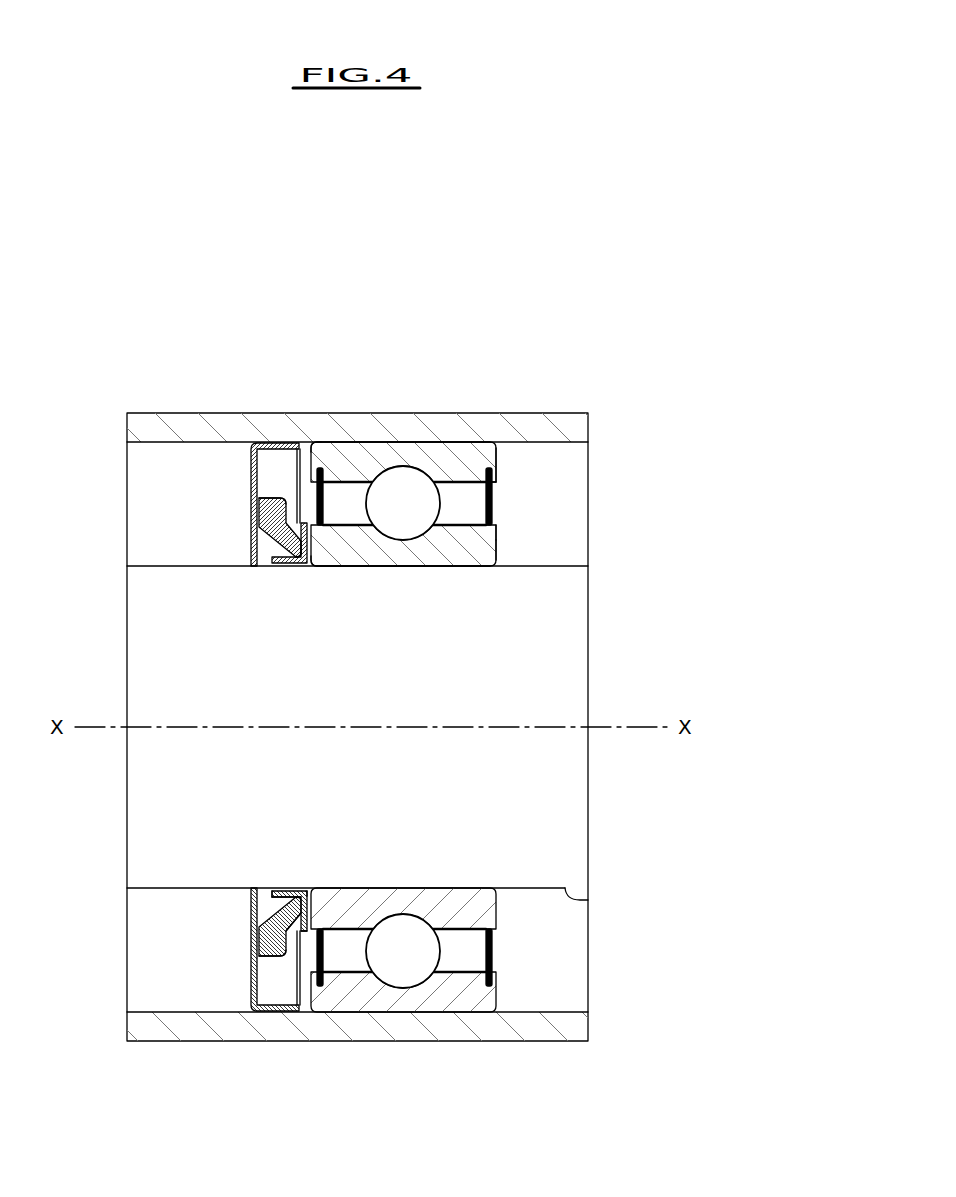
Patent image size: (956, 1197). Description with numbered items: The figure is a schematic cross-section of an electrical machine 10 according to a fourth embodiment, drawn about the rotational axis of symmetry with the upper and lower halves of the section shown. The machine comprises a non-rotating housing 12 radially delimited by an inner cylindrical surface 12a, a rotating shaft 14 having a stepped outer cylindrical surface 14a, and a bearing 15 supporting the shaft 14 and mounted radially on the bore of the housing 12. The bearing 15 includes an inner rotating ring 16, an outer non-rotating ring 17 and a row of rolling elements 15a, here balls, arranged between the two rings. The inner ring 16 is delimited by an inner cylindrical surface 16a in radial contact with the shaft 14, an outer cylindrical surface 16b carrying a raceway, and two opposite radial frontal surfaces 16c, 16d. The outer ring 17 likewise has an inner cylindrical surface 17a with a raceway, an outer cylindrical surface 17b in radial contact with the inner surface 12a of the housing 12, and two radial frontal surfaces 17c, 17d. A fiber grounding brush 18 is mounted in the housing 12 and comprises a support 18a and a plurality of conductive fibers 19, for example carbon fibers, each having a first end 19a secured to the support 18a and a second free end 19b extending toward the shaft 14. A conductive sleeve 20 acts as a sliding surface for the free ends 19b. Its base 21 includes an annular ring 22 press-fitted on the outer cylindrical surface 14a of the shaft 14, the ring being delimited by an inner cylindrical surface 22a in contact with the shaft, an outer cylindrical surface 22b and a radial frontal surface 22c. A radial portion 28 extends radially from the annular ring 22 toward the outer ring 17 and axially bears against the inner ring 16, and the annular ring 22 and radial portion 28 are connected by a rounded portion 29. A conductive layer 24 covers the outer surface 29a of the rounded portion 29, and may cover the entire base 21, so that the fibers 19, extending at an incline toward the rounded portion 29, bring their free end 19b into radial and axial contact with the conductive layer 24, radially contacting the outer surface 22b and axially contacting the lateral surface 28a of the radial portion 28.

The electrical machine 10 is at (651, 334).
The housing 12 is at (578, 406).
The inner cylindrical surface 12a is at (157, 442).
The rotating shaft 14 is at (590, 636).
The stepped outer cylindrical surface 14a is at (588, 900).
The bearing 15 is at (518, 497).
The rolling elements 15a is at (403, 503).
The inner ring 16 is at (497, 566).
The inner cylindrical surface 16a is at (419, 568).
The outer cylindrical surface 16b is at (497, 508).
The radial frontal surface 16c is at (309, 568).
The radial frontal surface 16d is at (485, 551).
The outer ring 17 is at (452, 458).
The inner cylindrical surface 17a is at (497, 488).
The outer cylindrical surface 17b is at (388, 442).
The radial frontal surface 17c is at (308, 458).
The radial frontal surface 17d is at (497, 456).
The fiber grounding brush 18 is at (234, 491).
The support 18a is at (252, 465).
The conductive fibers 19 is at (276, 530).
The first end 19a is at (262, 500).
The free end 19b is at (262, 573).
The conductive sleeve 20 is at (274, 562).
The base 21 is at (315, 880).
The annular ring 22 is at (303, 888).
The inner cylindrical surface 22a is at (283, 886).
The outer cylindrical surface 22b is at (262, 896).
The radial frontal surface 22c is at (259, 888).
The conductive layer 24 is at (294, 564).
The radial portion 28 is at (292, 944).
The lateral surface 28a is at (257, 956).
The rounded portion 29 is at (316, 893).
The outer surface 29a is at (313, 915).